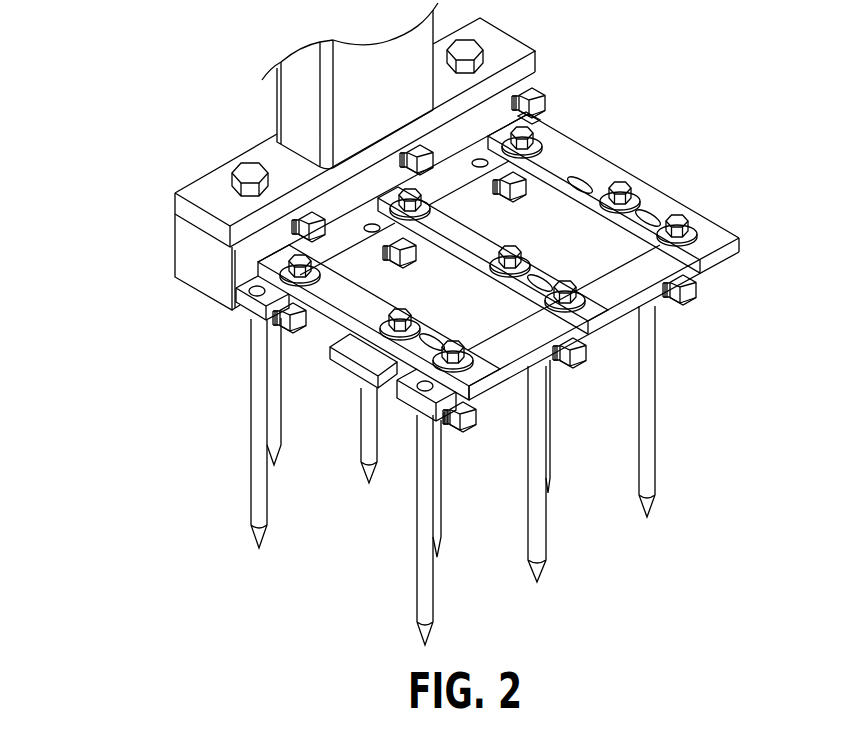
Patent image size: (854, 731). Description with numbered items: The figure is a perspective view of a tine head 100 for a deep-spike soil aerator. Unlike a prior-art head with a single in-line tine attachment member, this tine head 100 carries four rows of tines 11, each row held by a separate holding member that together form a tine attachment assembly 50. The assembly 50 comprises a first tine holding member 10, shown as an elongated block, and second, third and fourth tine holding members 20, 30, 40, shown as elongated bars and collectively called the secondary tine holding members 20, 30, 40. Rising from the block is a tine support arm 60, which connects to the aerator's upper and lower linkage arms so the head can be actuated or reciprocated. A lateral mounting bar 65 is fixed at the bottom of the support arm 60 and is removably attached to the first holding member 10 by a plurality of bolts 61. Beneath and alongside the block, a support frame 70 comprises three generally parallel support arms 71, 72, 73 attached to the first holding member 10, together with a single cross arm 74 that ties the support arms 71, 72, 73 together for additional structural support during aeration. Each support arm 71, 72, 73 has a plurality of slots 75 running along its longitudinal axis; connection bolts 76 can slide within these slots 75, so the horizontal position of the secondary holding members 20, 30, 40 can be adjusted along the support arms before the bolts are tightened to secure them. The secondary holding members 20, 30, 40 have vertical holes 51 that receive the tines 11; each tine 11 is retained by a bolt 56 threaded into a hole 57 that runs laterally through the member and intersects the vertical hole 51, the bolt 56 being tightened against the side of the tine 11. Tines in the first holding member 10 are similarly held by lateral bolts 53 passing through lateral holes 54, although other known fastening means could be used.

The tine head 100 is at (158, 68).
The first tine holding member 10 is at (176, 288).
The tine 11 is at (420, 586).
The second tine holding member 20 is at (230, 316).
The third tine holding member 30 is at (323, 370).
The fourth tine holding member 40 is at (382, 406).
The tine attachment assembly 50 is at (215, 448).
The vertical hole 51 is at (415, 395).
The lateral bolt 53 is at (551, 101).
The lateral hole 54 is at (536, 84).
The bolt 56 is at (474, 419).
The hole 57 is at (448, 428).
The tine support arm 60 is at (290, 122).
The bolt 61 is at (246, 168).
The lateral mounting bar 65 is at (505, 47).
The support frame 70 is at (612, 291).
The support arm 71 is at (355, 305).
The support arm 72 is at (457, 233).
The support arm 73 is at (592, 180).
The cross arm 74 is at (638, 282).
The slot 75 is at (594, 305).
The connection bolt 76 is at (682, 214).